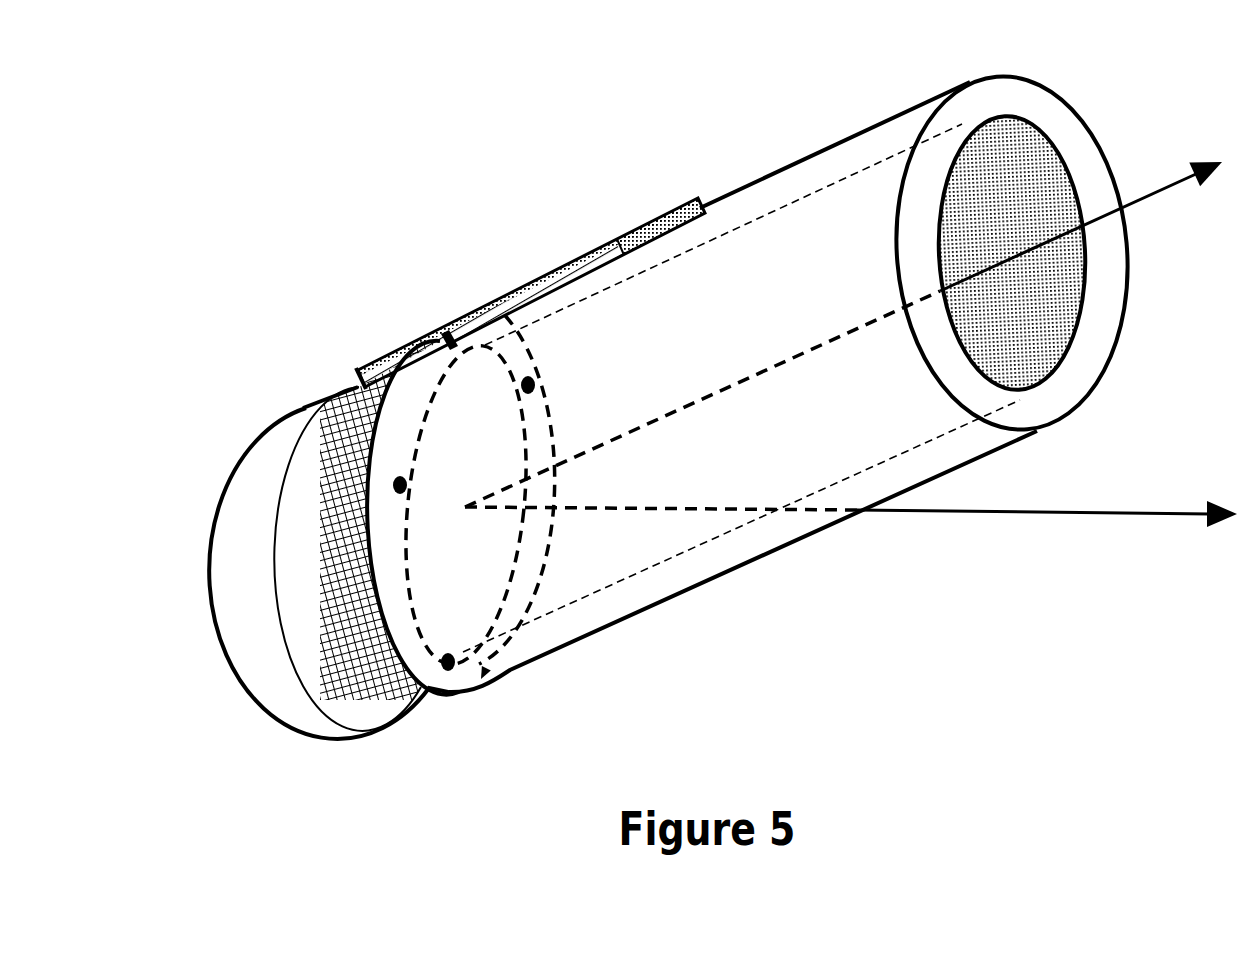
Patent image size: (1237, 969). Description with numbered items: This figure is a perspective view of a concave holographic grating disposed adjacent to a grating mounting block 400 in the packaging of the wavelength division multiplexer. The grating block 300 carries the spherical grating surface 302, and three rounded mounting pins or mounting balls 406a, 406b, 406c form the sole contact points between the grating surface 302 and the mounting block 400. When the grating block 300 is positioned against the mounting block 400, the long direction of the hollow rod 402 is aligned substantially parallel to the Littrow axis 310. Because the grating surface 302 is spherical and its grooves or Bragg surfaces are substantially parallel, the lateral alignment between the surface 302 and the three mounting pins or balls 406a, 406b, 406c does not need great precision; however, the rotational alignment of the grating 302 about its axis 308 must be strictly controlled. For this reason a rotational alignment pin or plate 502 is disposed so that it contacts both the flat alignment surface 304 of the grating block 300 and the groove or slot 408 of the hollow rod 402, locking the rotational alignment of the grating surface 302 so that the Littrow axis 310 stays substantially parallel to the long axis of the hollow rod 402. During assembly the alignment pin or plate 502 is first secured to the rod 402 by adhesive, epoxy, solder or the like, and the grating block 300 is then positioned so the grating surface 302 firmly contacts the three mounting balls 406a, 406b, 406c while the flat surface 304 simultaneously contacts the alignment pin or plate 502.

The grating block 300 is at (322, 548).
The grating surface 302 is at (373, 657).
The alignment surface 304 is at (327, 395).
The axis 308 is at (1160, 497).
The Littrow axis 310 is at (1157, 187).
The mounting block 400 is at (754, 381).
The hollow rod 402 is at (943, 463).
The mounting pin or mounting ball 406a is at (448, 671).
The mounting pin or mounting ball 406b is at (535, 383).
The mounting pin or mounting ball 406c is at (407, 483).
The groove or slot 408 is at (455, 345).
The rotational alignment pin or plate 502 is at (580, 250).